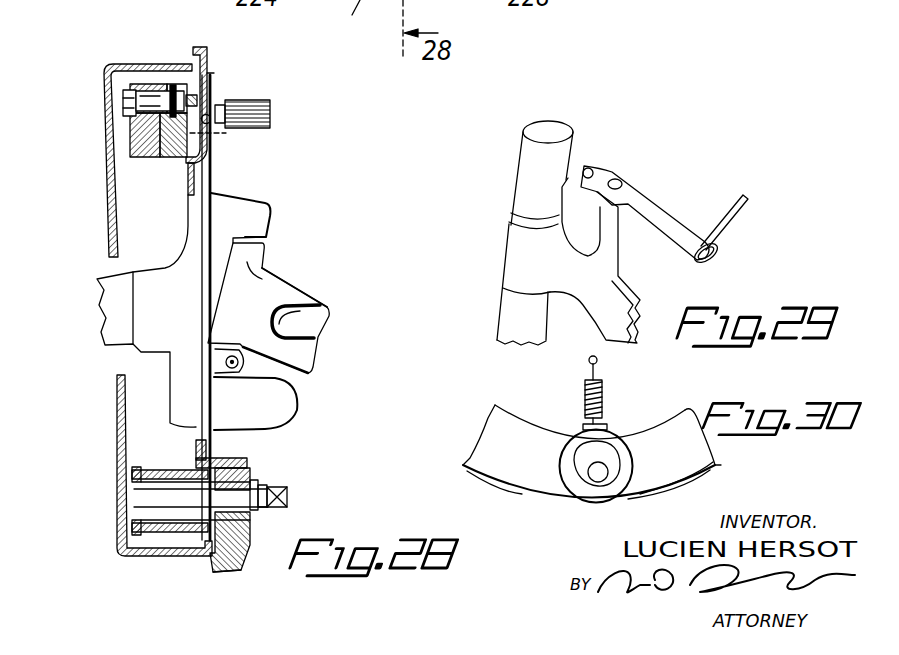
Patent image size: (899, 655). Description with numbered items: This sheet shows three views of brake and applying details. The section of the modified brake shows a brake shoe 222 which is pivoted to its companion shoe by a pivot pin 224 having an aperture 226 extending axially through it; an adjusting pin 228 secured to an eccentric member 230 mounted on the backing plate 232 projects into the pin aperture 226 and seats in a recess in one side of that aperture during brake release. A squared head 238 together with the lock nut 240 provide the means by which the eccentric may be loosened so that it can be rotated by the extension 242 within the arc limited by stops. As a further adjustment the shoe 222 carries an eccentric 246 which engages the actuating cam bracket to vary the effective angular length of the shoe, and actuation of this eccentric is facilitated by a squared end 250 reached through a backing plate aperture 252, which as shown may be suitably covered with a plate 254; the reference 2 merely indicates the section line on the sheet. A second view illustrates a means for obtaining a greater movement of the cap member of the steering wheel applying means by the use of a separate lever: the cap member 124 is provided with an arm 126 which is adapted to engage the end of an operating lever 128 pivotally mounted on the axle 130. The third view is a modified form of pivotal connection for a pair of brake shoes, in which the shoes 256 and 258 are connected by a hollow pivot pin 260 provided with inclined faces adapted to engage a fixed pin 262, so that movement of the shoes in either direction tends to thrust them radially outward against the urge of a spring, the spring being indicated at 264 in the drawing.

In FIG. 28, the bracket 2 is at (143, 63).
In FIG. 28, the brake shoe 222 is at (130, 153).
In FIG. 28, the pivot pin 224 is at (145, 470).
In FIG. 28, the aperture 226 is at (133, 491).
In FIG. 28, the adjusting pin 228 is at (138, 505).
In FIG. 28, the eccentric member 230 is at (255, 530).
In FIG. 28, the backing plate 232 is at (240, 570).
In FIG. 28, the squared head 238 is at (290, 494).
In FIG. 28, the lock nut 240 is at (260, 482).
In FIG. 28, the extension 242 is at (455, 0).
In FIG. 28, the eccentric 246 is at (178, 95).
In FIG. 28, the squared end 250 is at (200, 99).
In FIG. 28, the backing plate aperture 252 is at (271, 108).
In FIG. 28, the plate 254 is at (223, 128).
In FIG. 29, the cap member 124 is at (562, 155).
In FIG. 29, the arm 126 is at (592, 169).
In FIG. 29, the operating lever 128 is at (604, 173).
In FIG. 29, the axle 130 is at (590, 305).
In FIG. 30, the brake shoe 256 is at (518, 440).
In FIG. 30, the brake shoe 258 is at (665, 435).
In FIG. 30, the hollow pivot pin 260 is at (580, 480).
In FIG. 30, the fixed pin 262 is at (600, 470).
In FIG. 30, the spring 264 is at (602, 393).